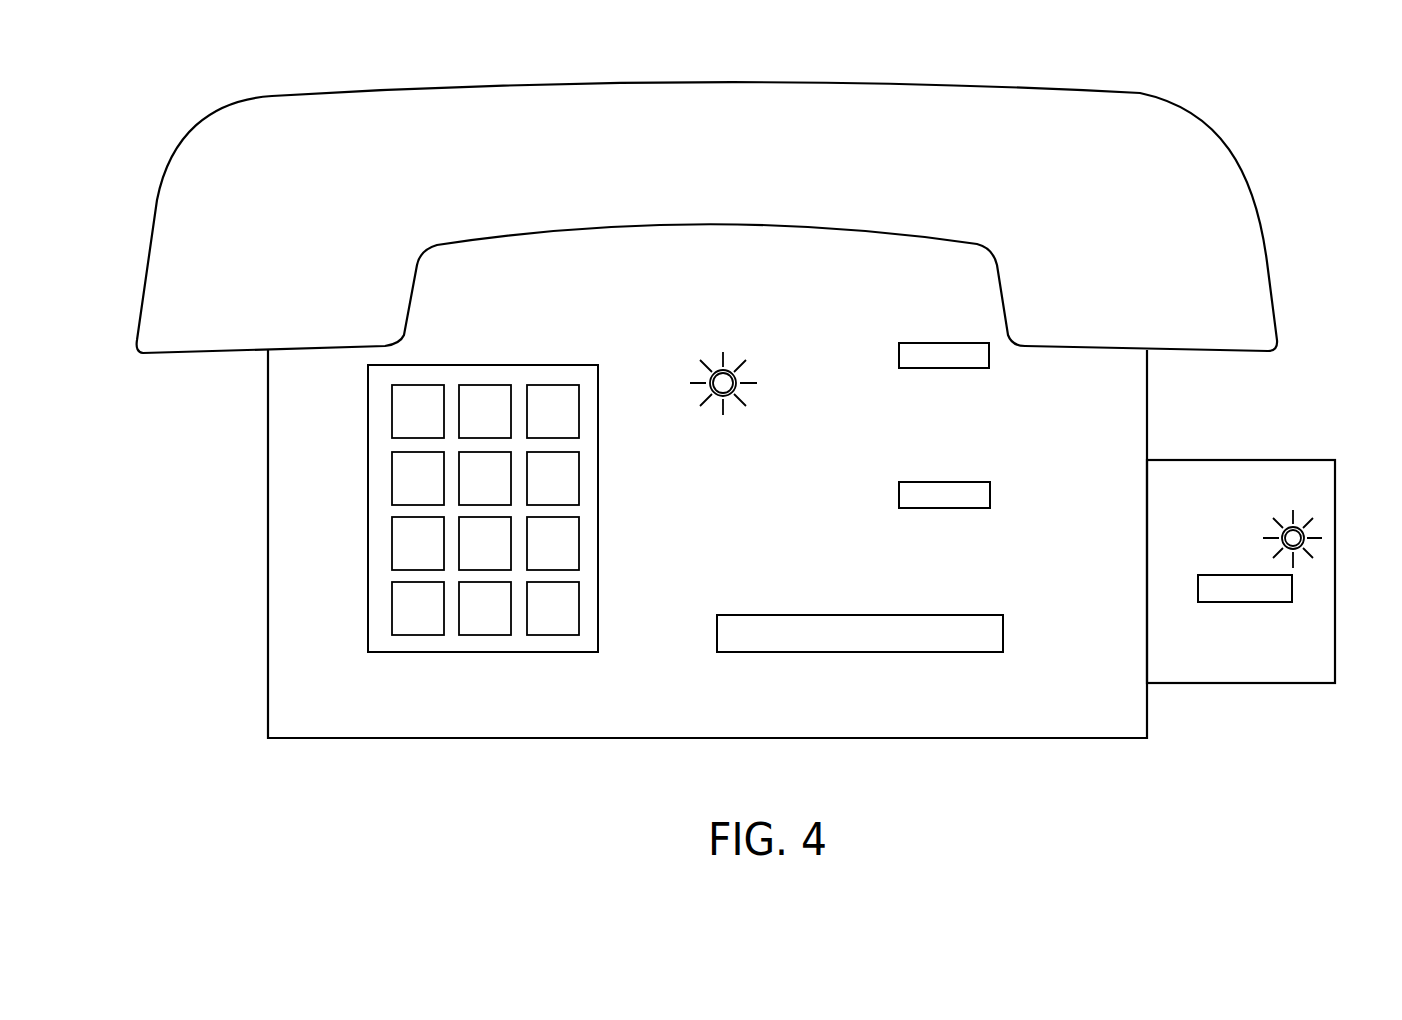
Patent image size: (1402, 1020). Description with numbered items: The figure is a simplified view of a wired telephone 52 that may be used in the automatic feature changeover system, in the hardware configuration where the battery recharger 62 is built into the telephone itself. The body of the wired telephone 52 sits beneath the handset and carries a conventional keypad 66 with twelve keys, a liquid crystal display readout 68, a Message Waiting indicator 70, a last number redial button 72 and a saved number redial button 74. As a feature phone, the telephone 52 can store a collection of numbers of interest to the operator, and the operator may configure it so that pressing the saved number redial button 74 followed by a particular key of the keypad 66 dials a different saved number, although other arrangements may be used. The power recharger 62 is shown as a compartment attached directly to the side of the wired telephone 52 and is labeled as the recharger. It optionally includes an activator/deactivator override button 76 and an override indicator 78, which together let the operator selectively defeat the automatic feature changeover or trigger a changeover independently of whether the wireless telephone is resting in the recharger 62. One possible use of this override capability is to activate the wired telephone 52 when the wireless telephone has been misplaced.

The wired telephone 52 is at (280, 667).
The battery recharger 62 is at (1303, 468).
The keypad 66 is at (378, 505).
The liquid crystal display (LCD) readout 68 is at (1000, 633).
The Message Waiting indicator 70 is at (705, 380).
The last number redial button 72 is at (900, 347).
The saved number redial button 74 is at (985, 490).
The activator/deactivator override button 76 is at (1287, 588).
The override indicator 78 is at (1305, 533).